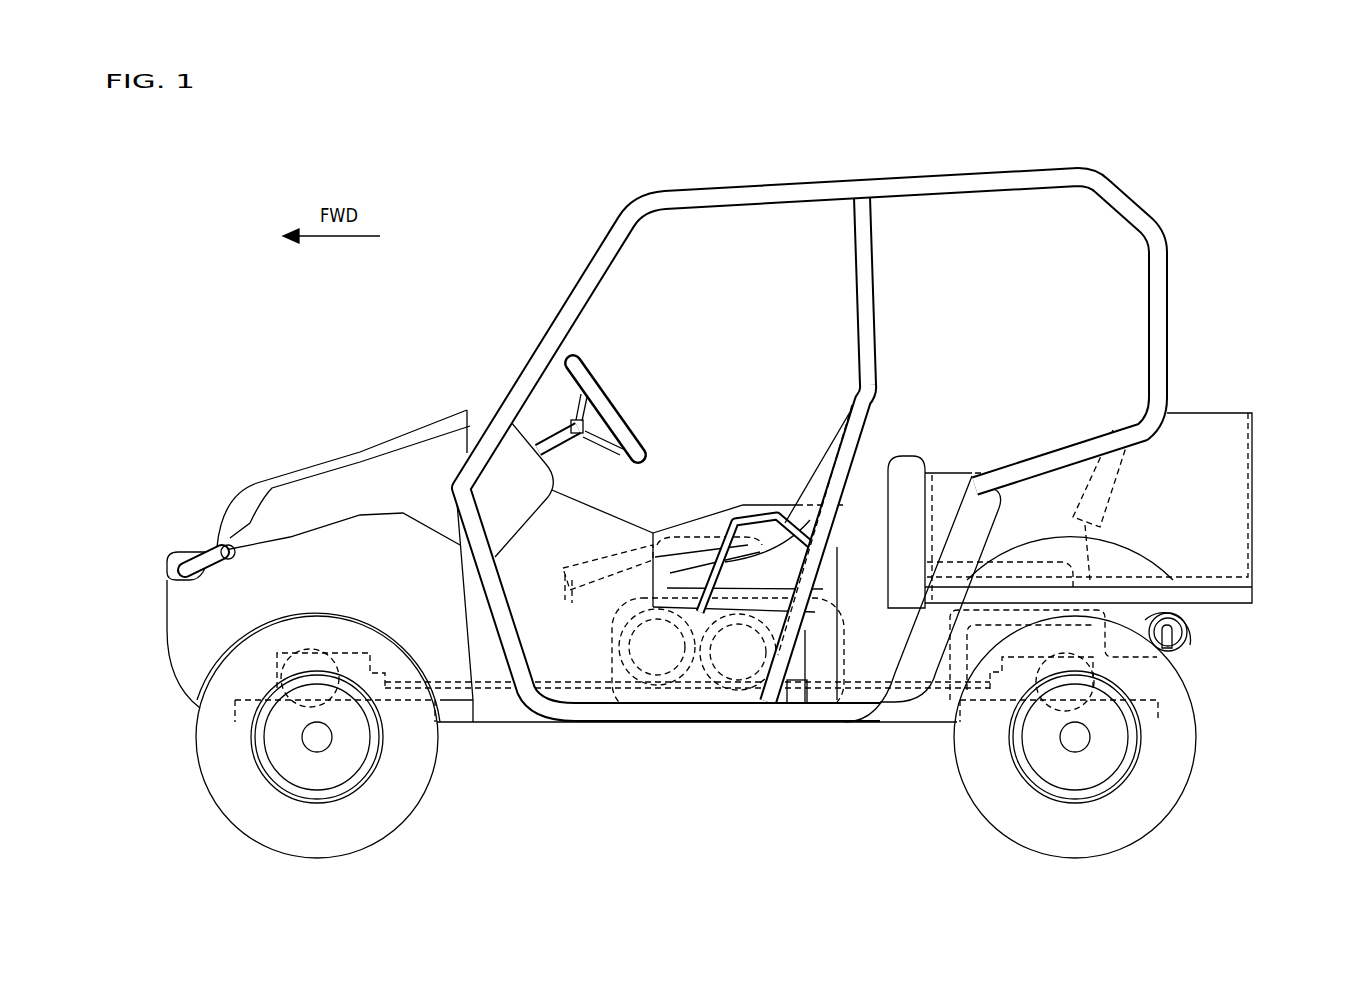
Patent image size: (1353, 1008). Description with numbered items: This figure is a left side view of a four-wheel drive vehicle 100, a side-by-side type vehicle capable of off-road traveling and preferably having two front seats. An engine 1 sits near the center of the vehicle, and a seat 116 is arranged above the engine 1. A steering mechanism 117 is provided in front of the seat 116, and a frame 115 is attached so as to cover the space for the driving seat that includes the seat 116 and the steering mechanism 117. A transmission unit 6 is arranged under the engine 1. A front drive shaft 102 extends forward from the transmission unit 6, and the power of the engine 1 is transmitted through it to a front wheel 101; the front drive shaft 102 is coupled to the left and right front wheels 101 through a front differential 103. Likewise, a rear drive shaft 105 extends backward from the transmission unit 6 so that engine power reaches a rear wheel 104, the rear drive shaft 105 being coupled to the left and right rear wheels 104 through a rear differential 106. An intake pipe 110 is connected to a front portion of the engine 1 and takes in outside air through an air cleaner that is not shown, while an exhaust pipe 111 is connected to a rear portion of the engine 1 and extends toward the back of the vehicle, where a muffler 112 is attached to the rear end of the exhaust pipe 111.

The four-wheel drive vehicle 100 is at (1170, 157).
The front wheel 101 is at (417, 767).
The front drive shaft 102 is at (502, 690).
The front differential 103 is at (350, 653).
The rear wheel 104 is at (1170, 777).
The rear drive shaft 105 is at (943, 705).
The rear differential 106 is at (1000, 703).
The intake pipe 110 is at (603, 563).
The exhaust pipe 111 is at (840, 713).
The muffler 112 is at (1187, 640).
The frame 115 is at (760, 712).
The seat 116 is at (817, 487).
The steering mechanism 117 is at (585, 373).
The engine 1 is at (780, 570).
The transmission unit 6 is at (665, 692).